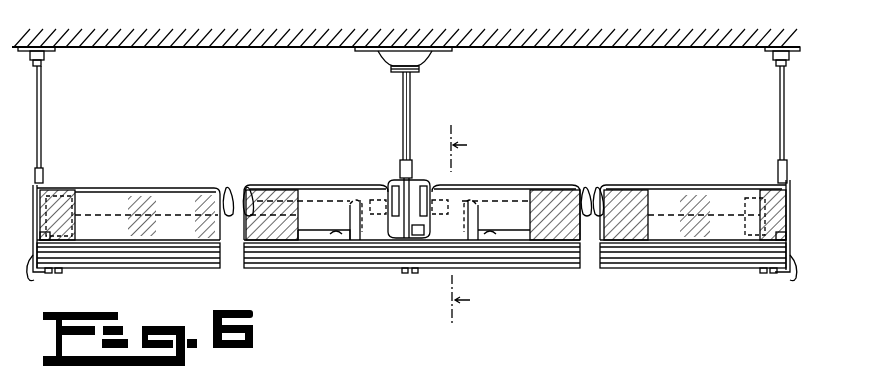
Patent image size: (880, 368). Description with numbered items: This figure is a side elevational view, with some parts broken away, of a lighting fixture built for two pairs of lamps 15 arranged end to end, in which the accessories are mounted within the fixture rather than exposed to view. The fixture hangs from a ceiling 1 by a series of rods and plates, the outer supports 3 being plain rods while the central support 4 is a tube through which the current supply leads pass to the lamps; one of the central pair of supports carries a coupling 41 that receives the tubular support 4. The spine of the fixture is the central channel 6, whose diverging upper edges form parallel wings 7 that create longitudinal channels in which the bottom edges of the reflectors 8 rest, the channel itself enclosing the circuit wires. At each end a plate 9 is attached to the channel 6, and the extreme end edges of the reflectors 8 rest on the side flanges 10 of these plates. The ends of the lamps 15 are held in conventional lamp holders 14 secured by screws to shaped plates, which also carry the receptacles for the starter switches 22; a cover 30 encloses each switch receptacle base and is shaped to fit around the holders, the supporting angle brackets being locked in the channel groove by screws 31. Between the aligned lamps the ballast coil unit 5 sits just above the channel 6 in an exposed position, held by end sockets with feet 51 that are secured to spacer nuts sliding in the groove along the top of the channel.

The ceiling 1 is at (510, 48).
The support rod 3 is at (43, 97).
The tubular support 4 is at (402, 97).
The coupling 41 is at (401, 163).
The lamp holder 14 is at (404, 182).
The wings 7 is at (468, 225).
The reflector 8 is at (192, 190).
The ballast coil unit 5 is at (316, 225).
The end socket feet 51 is at (480, 275).
The channel 6 is at (568, 263).
The end plate 9 is at (413, 241).
The side flange 10 is at (58, 272).
The lamp 15 is at (222, 186).
The starter switch 22 is at (72, 205).
The cover plate 30 is at (50, 235).
The screw 31 is at (415, 273).